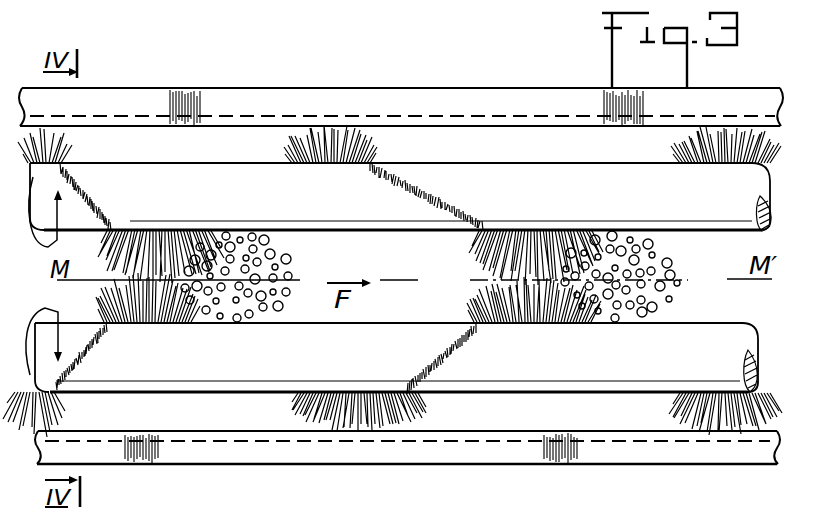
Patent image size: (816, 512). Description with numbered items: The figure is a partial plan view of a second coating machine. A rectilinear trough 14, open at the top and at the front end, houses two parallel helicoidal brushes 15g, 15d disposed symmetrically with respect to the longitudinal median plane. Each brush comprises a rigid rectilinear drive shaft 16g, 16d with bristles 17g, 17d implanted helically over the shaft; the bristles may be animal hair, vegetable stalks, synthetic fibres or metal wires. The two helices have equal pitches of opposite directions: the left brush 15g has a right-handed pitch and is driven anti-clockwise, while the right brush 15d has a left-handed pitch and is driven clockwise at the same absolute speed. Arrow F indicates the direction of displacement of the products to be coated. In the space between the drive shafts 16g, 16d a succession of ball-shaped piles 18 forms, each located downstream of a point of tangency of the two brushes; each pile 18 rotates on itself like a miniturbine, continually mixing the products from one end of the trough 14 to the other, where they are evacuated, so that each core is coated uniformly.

The rectilinear trough 14 is at (492, 108).
The helicoidal brush 15g is at (229, 158).
The drive shaft 16g is at (546, 166).
The bristles 17g is at (378, 150).
The helicoidal brush 15d is at (261, 393).
The drive shaft 16d is at (547, 373).
The bristles 17d is at (492, 314).
The ball-shaped piles 18 is at (215, 272).